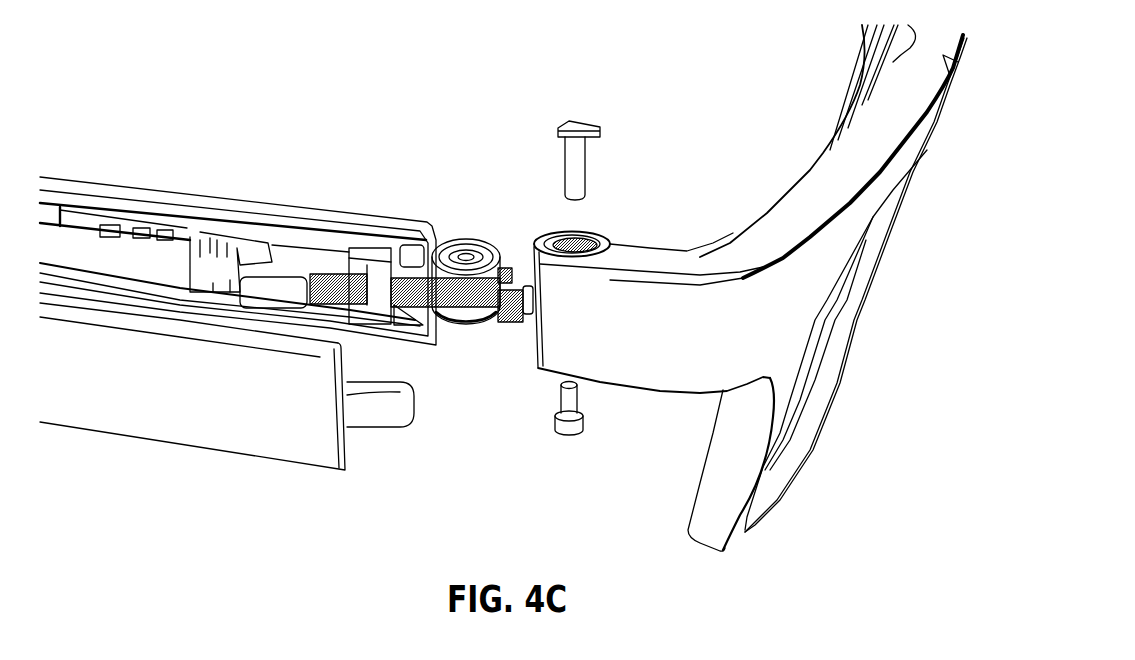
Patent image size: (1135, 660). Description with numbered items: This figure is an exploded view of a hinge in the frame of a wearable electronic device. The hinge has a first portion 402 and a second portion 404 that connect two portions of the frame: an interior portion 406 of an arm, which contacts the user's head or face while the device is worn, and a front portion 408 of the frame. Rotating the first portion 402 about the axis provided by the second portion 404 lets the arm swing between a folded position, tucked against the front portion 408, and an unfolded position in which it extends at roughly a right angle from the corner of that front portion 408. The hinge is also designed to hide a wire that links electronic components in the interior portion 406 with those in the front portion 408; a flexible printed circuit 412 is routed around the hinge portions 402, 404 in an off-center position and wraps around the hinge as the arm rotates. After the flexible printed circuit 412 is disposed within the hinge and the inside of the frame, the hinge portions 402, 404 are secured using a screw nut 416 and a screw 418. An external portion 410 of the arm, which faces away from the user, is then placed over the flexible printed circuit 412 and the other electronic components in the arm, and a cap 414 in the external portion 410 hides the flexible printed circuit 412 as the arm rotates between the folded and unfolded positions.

The first portion of the hinge 402 is at (452, 262).
The second portion of the hinge 404 is at (572, 243).
The interior portion of the arm 406 is at (282, 222).
The front portion of the frame 408 is at (732, 262).
The external portion of the arm 410 is at (218, 403).
The flexible printed circuit 412 is at (452, 262).
The cap 414 is at (390, 406).
The screw nut 416 is at (573, 153).
The screw 418 is at (567, 433).